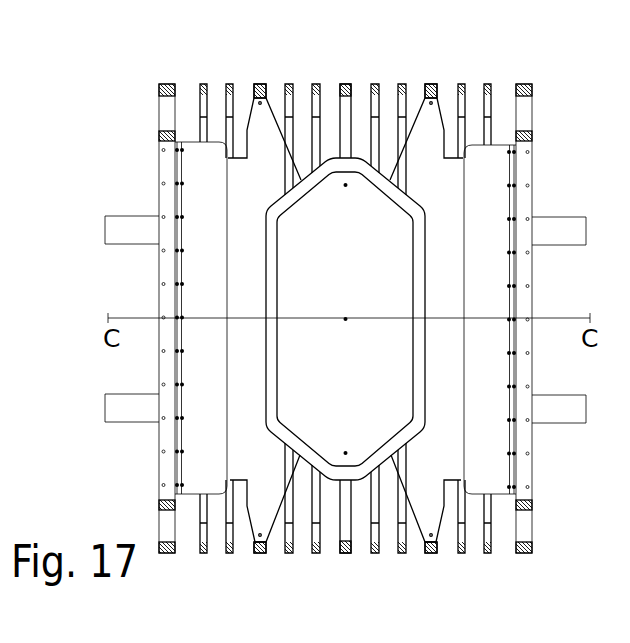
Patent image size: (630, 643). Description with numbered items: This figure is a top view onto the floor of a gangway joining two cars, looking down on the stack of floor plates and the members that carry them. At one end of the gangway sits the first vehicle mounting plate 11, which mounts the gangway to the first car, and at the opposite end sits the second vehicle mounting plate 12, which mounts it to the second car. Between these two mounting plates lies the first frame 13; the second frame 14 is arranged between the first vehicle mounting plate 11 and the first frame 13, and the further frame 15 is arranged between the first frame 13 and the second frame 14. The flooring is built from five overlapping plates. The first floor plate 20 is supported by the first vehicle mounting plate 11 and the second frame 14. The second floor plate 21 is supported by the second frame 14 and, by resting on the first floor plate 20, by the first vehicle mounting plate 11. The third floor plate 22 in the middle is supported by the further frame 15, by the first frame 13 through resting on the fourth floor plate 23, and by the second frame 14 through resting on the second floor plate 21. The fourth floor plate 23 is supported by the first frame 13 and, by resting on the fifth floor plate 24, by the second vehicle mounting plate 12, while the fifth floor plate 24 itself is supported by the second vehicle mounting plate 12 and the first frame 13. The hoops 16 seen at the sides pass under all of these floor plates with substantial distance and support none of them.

The first vehicle mounting plate 11 is at (525, 554).
The second vehicle mounting plate 12 is at (166, 554).
The first frame 13 is at (263, 554).
The second frame 14 is at (431, 554).
The further frame 15 is at (346, 554).
The hoops 16 is at (230, 84).
The first floor plate 20 is at (522, 472).
The second floor plate 21 is at (424, 516).
The third floor plate 22 is at (331, 452).
The fourth floor plate 23 is at (267, 517).
The fifth floor plate 24 is at (194, 474).